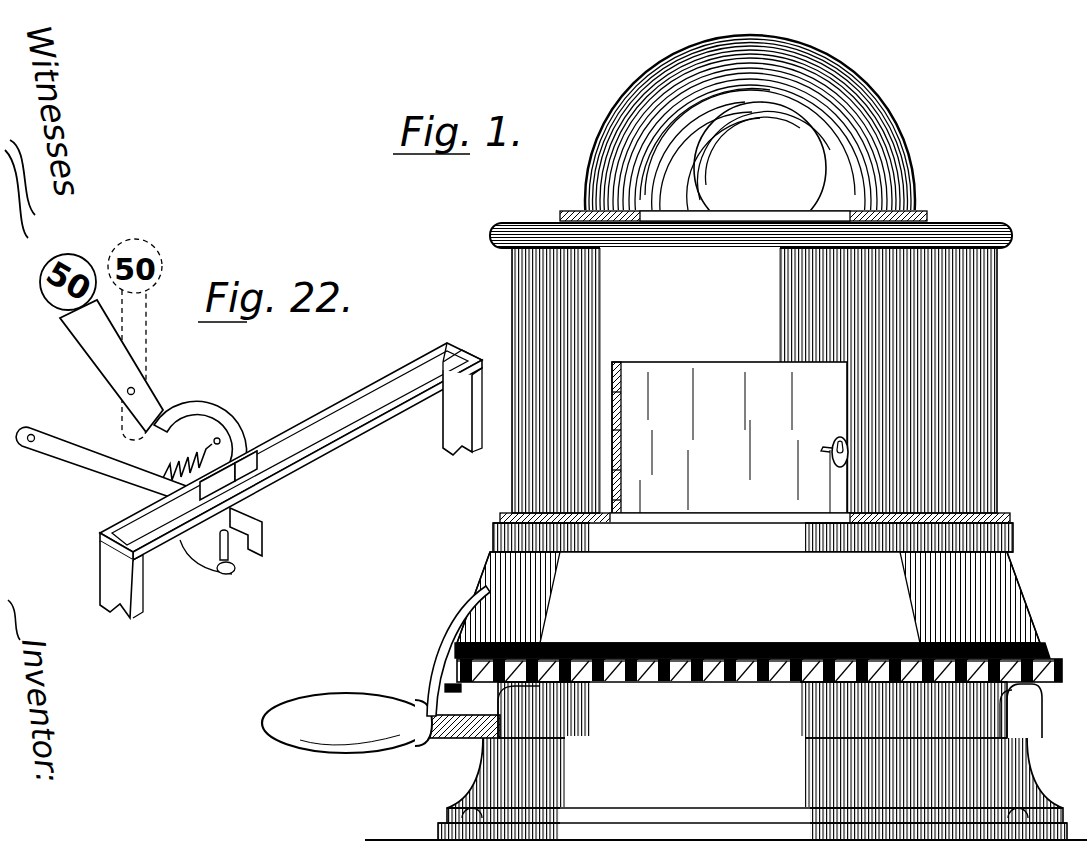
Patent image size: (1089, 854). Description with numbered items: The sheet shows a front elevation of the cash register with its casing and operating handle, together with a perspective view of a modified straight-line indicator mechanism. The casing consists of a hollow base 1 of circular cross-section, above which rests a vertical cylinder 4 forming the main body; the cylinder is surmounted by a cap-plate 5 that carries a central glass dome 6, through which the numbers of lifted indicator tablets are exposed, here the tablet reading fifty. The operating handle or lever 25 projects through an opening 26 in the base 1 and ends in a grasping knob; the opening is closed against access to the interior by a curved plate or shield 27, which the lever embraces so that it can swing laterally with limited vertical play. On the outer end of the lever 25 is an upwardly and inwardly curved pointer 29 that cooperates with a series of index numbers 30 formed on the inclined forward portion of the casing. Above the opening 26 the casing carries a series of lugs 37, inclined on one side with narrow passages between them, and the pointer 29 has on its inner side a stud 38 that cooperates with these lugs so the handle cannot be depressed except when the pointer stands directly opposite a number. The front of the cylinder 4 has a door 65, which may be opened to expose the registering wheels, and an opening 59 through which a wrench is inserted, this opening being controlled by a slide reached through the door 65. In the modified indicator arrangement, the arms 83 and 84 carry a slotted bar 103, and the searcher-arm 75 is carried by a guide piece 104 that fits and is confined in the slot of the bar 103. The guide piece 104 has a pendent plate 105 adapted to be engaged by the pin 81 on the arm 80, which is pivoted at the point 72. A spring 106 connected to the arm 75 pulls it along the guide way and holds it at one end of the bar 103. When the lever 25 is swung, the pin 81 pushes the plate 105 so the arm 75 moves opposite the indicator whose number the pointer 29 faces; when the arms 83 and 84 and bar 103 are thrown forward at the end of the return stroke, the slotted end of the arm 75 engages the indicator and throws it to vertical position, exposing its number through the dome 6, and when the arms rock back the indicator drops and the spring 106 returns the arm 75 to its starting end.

In FIG. 1, the hollow base 1 is at (726, 788).
In FIG. 1, the vertical cylinder 4 is at (997, 373).
In FIG. 1, the cap-plate 5 is at (1013, 234).
In FIG. 1, the glass dome 6 is at (916, 152).
In FIG. 1, the operating handle or lever 25 is at (478, 736).
In FIG. 1, the opening 26 is at (992, 713).
In FIG. 1, the curved plate or shield 27 is at (752, 710).
In FIG. 1, the pointer 29 is at (437, 653).
In FIG. 1, the index numbers 30 is at (643, 558).
In FIG. 1, the lugs 37 is at (763, 680).
In FIG. 1, the stud 38 is at (463, 694).
In FIG. 1, the opening 59 is at (992, 484).
In FIG. 1, the door 65 is at (729, 442).
In FIG. 22, the pivot point 72 is at (38, 442).
In FIG. 22, the searcher-arm 75 is at (218, 430).
In FIG. 22, the arm 80 is at (106, 464).
In FIG. 22, the pin 81 is at (223, 565).
In FIG. 22, the arm 83 is at (449, 423).
In FIG. 22, the arm 84 is at (135, 596).
In FIG. 22, the slotted bar 103 is at (340, 440).
In FIG. 22, the guide piece 104 is at (252, 483).
In FIG. 22, the pendent plate 105 is at (263, 541).
In FIG. 22, the spring 106 is at (166, 474).